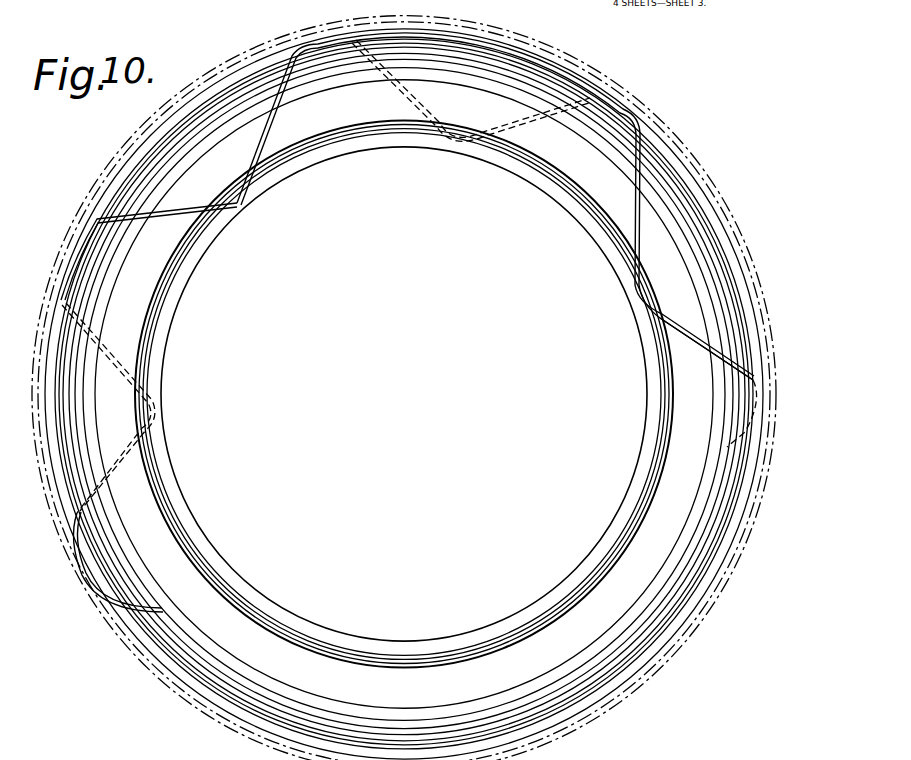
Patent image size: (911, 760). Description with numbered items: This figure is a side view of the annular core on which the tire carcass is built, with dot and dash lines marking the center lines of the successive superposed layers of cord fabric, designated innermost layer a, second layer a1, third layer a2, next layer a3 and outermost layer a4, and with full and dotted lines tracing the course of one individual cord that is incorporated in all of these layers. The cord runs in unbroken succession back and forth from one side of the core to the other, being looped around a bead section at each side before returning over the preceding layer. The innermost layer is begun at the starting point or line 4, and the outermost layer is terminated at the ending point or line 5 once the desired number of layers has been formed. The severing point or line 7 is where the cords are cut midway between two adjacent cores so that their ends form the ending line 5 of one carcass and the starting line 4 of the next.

The innermost layer a is at (507, 45).
The second layer a1 is at (540, 50).
The third layer a2 is at (550, 57).
The next layer a3 is at (577, 64).
The outermost layer a4 is at (600, 74).
The starting point or line 4 is at (723, 450).
The ending point or line 5 is at (197, 582).
The severing point or line 7 is at (225, 680).